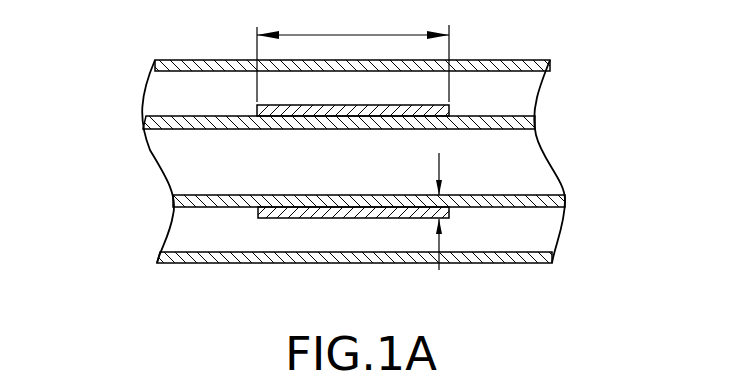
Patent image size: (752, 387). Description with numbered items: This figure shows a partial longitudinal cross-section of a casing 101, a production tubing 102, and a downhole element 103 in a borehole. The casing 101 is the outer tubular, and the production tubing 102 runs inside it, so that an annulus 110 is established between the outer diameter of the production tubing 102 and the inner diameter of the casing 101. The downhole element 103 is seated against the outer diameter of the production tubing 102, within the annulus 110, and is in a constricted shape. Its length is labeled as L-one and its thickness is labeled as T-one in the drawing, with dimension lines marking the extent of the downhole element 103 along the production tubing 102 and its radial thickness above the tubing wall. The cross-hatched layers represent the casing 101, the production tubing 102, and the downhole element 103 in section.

The annulus 110 is at (187, 89).
The casing 101 is at (519, 62).
The production tubing 102 is at (540, 205).
The downhole element 103 is at (291, 210).